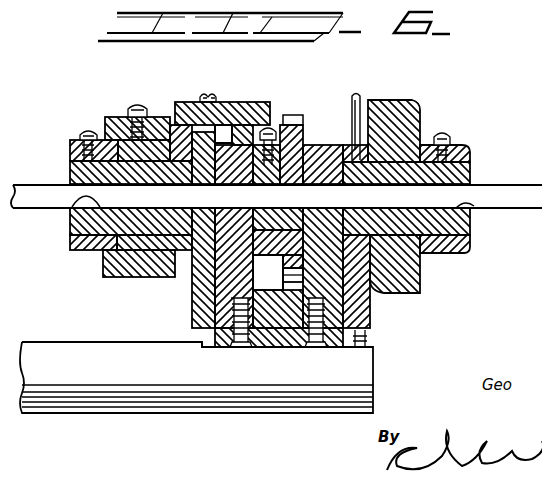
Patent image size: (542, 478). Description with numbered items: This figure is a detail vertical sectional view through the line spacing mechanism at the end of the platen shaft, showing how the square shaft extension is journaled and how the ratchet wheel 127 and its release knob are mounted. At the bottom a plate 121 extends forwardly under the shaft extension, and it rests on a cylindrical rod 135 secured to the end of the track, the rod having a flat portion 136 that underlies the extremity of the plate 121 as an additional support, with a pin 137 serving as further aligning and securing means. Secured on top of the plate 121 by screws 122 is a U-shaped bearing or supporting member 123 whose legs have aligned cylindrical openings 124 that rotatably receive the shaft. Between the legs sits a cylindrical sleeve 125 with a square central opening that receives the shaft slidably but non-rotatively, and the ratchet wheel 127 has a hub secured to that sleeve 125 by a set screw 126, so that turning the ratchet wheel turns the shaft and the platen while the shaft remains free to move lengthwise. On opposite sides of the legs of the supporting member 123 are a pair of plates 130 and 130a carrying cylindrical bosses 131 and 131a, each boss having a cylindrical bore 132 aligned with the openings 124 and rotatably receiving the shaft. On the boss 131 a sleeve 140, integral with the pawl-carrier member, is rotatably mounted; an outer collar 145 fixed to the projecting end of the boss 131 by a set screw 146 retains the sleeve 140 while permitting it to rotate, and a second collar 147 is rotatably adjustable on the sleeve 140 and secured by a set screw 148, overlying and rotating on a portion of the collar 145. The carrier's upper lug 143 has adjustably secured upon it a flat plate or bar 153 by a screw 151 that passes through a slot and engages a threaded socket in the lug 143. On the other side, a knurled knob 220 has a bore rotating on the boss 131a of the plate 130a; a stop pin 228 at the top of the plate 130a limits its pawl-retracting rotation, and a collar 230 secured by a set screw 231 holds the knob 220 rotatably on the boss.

The plate 121 is at (306, 350).
The screws 122 is at (233, 348).
The U-shaped bearing or supporting member 123 is at (228, 285).
The cylindrical openings 124 is at (268, 128).
The cylindrical sleeve 125 is at (318, 145).
The set screw 126 is at (283, 125).
The ratchet wheel 127 is at (296, 270).
The plate 130 is at (213, 310).
The plate 130a is at (363, 310).
The cylindrical boss 131 is at (90, 222).
The cylindrical boss 131a is at (460, 170).
The cylindrical bores 132 is at (72, 208).
The cylindrical rod 135 is at (108, 380).
The flat portion 136 is at (203, 350).
The pin 137 is at (368, 342).
The sleeve 140 is at (138, 252).
The upper lug 143 is at (243, 148).
The outer collar 145 is at (88, 243).
The set screw 146 is at (80, 131).
The second collar 147 is at (118, 117).
The set screw 148 is at (147, 105).
The screw 151 is at (204, 95).
The flat plate or bar 153 is at (222, 103).
The knurled knob 220 is at (418, 107).
The stop pin 228 is at (361, 100).
The collar 230 is at (470, 148).
The set screw 231 is at (448, 134).